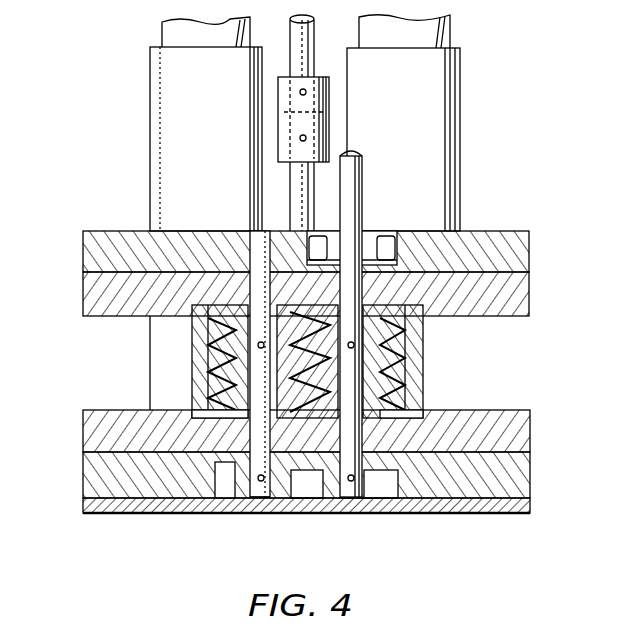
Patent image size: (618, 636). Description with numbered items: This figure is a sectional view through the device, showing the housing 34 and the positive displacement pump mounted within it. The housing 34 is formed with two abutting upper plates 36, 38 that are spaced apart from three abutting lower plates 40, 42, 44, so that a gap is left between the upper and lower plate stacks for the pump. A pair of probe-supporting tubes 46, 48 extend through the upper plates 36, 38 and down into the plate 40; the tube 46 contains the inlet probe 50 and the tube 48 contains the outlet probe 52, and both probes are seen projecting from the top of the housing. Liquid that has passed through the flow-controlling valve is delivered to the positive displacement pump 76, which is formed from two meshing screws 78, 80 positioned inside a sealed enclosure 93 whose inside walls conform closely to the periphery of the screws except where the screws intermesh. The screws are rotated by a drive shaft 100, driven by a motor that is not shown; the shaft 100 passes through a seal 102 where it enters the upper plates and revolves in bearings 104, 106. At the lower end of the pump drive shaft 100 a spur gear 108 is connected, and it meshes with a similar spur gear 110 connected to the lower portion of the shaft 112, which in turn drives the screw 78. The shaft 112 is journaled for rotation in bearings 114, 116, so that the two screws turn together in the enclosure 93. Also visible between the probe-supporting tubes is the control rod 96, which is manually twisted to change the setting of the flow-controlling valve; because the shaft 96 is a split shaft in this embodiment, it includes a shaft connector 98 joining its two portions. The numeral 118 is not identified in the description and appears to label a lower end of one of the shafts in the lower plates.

The housing 34 is at (73, 226).
The upper plate 36 is at (530, 252).
The upper plate 38 is at (530, 300).
The lower plate 40 is at (530, 430).
The lower plate 42 is at (530, 477).
The lower plate 44 is at (530, 510).
The probe-supporting tube 46 is at (459, 136).
The probe-supporting tube 48 is at (152, 118).
The inlet probe 50 is at (440, 36).
The outlet probe 52 is at (170, 29).
The positive displacement pump 76 is at (222, 357).
The screw 78 is at (222, 310).
The screw 80 is at (328, 310).
The sealed enclosure 93 is at (415, 365).
The control rod 96 is at (313, 42).
The shaft connector 98 is at (276, 77).
The drive shaft 100 is at (363, 196).
The seal 102 is at (382, 255).
The bearing 104 is at (385, 292).
The bearing 106 is at (423, 430).
The spur gear 108 is at (378, 488).
The spur gear 110 is at (287, 495).
The shaft 112 is at (260, 492).
The bearing 114 is at (237, 440).
The bearing 116 is at (244, 275).
The rod end 118 is at (335, 497).